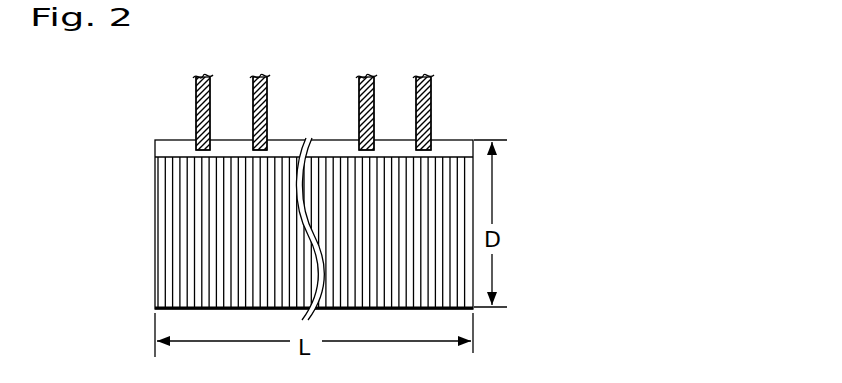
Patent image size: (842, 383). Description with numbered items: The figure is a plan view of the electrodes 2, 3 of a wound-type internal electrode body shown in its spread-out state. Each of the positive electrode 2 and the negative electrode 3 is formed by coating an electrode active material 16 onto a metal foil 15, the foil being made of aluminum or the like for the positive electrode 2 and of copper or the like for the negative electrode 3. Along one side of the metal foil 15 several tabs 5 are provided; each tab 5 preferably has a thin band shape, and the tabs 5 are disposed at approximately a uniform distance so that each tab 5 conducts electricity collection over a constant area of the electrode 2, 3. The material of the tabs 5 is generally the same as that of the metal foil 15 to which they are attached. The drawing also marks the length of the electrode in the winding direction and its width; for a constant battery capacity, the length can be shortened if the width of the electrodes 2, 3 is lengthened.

The positive electrode 2 is at (339, 197).
The negative electrode 3 is at (280, 197).
The tab 5 is at (196, 133).
The metal foil 15 is at (162, 152).
The electrode active material 16 is at (172, 237).